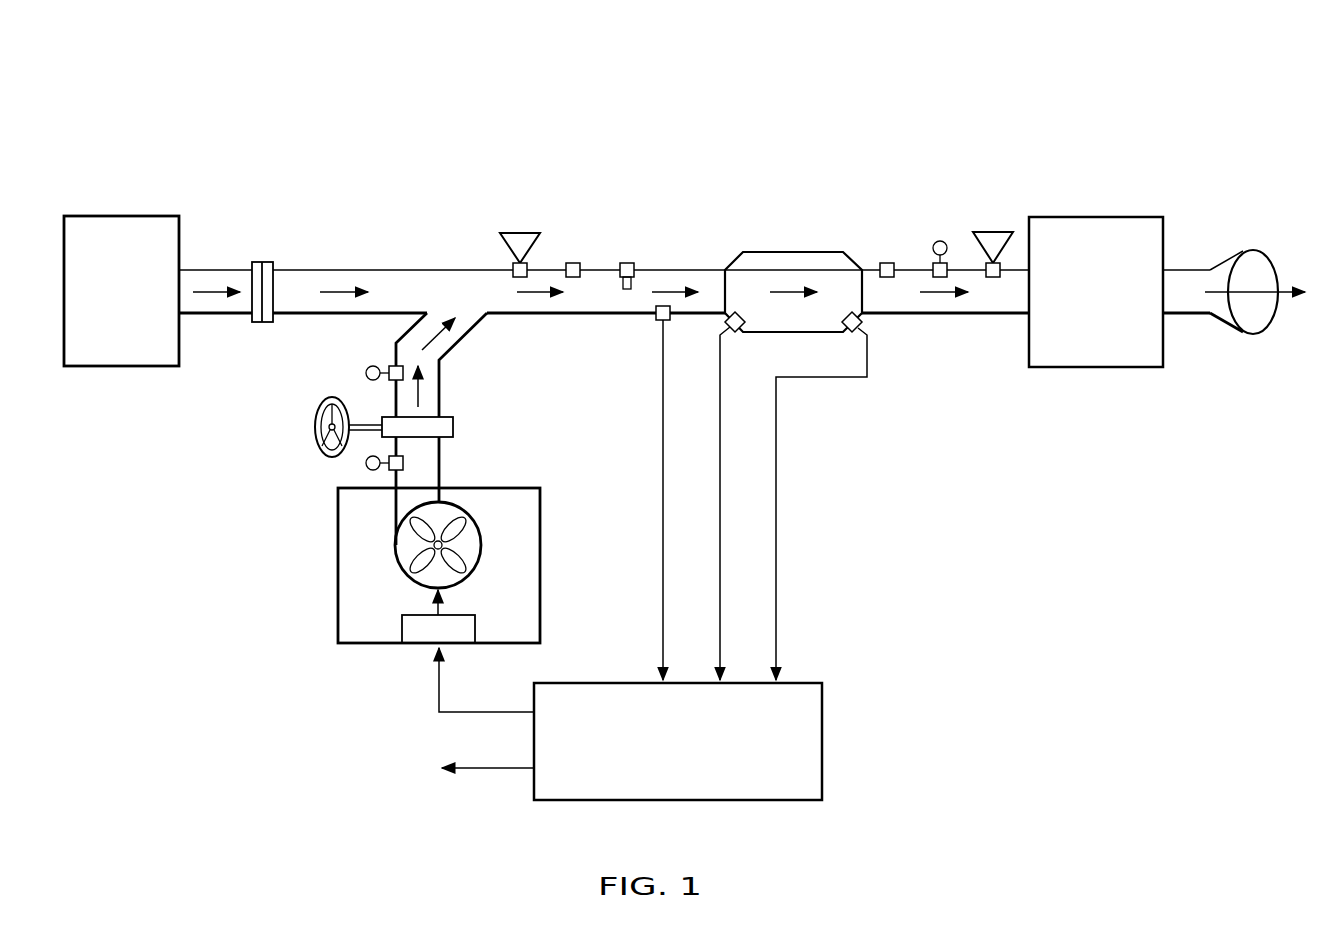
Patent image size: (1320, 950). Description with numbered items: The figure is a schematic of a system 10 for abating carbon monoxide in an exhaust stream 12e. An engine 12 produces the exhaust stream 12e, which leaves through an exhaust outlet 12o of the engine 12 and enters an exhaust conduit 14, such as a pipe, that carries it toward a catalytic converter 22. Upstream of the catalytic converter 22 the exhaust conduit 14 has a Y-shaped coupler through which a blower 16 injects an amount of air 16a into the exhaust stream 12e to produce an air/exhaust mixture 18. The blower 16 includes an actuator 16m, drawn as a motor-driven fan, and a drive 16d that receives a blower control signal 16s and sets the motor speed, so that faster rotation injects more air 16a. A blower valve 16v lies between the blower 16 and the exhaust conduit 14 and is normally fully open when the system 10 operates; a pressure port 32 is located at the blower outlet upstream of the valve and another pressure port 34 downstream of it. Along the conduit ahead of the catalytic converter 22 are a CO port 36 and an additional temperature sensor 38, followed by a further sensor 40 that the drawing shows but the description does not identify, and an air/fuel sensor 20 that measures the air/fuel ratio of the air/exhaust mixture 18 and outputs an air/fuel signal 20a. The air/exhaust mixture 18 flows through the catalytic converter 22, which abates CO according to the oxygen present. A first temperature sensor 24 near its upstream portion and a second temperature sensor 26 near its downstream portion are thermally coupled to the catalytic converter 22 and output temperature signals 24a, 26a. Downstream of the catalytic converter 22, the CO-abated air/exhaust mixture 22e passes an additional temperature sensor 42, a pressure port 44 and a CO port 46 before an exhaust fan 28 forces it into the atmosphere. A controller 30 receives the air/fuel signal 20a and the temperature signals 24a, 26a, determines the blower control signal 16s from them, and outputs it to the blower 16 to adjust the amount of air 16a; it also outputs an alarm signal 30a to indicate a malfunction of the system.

The system 10 is at (1009, 58).
The engine 12 is at (173, 232).
The exhaust stream 12e is at (213, 292).
The exhaust outlet 12o is at (213, 313).
The exhaust conduit 14 is at (425, 270).
The blower 16 is at (540, 550).
The air 16a is at (420, 388).
The blower valve 16v is at (453, 427).
The actuator 16m is at (482, 530).
The drive 16d is at (475, 630).
The blower control signal 16s is at (439, 692).
The air/exhaust mixture 18 is at (672, 292).
The air/fuel sensor 20 is at (657, 320).
The air/fuel signal 20a is at (663, 418).
The catalytic converter 22 is at (795, 252).
The CO-abated air/exhaust mixture 22e is at (942, 293).
The first temperature sensor 24 is at (737, 332).
The temperature signal 24a is at (720, 548).
The second temperature sensor 26 is at (847, 327).
The temperature signal 26a is at (776, 460).
The exhaust fan 28 is at (1098, 217).
The controller 30 is at (822, 738).
The alarm signal 30a is at (490, 772).
The pressure port 32 is at (366, 463).
The pressure port 34 is at (366, 373).
The CO port 36 is at (520, 255).
The additional temperature sensor 38 is at (573, 263).
The exhaust sensor 40 is at (627, 263).
The additional temperature sensor 42 is at (887, 263).
The pressure port 44 is at (942, 241).
The CO port 46 is at (995, 255).